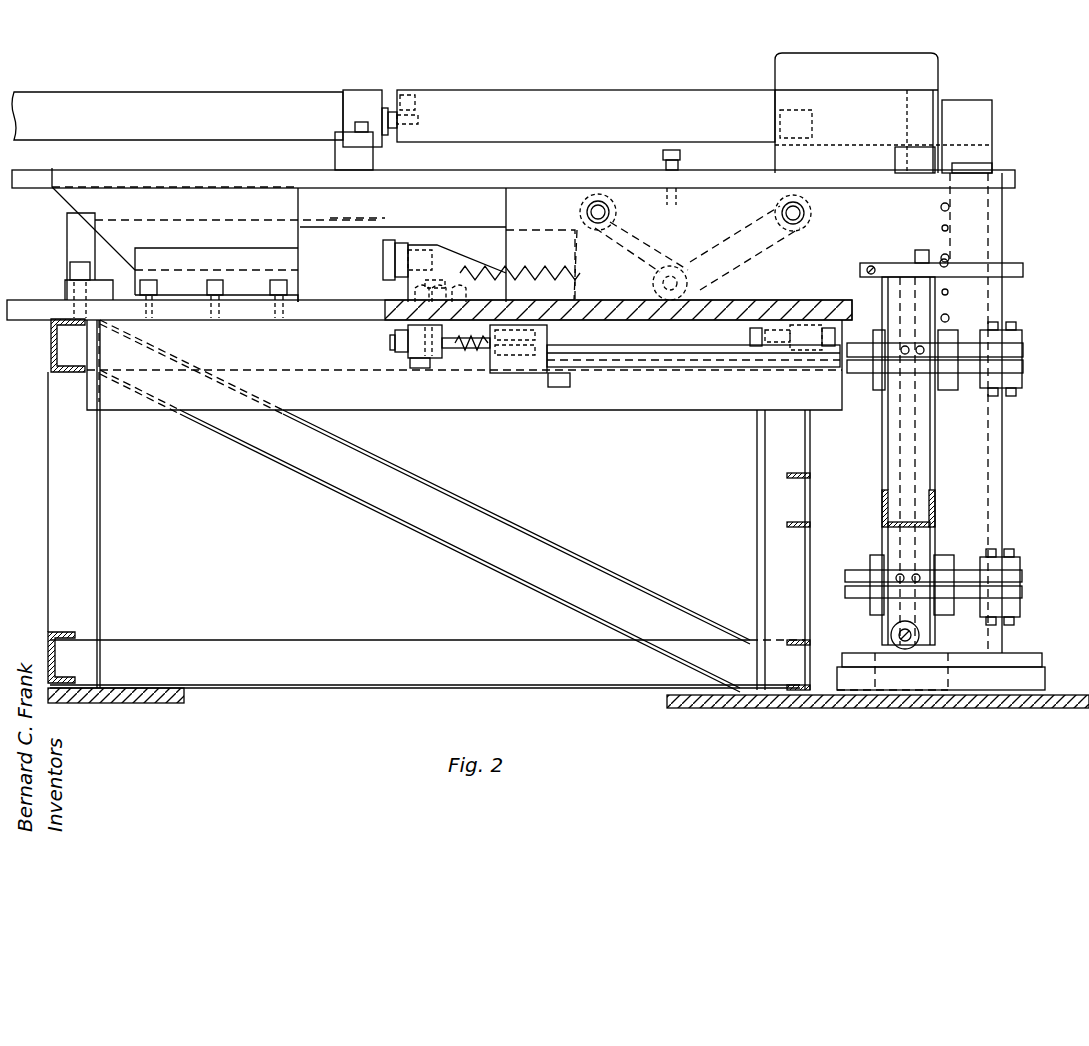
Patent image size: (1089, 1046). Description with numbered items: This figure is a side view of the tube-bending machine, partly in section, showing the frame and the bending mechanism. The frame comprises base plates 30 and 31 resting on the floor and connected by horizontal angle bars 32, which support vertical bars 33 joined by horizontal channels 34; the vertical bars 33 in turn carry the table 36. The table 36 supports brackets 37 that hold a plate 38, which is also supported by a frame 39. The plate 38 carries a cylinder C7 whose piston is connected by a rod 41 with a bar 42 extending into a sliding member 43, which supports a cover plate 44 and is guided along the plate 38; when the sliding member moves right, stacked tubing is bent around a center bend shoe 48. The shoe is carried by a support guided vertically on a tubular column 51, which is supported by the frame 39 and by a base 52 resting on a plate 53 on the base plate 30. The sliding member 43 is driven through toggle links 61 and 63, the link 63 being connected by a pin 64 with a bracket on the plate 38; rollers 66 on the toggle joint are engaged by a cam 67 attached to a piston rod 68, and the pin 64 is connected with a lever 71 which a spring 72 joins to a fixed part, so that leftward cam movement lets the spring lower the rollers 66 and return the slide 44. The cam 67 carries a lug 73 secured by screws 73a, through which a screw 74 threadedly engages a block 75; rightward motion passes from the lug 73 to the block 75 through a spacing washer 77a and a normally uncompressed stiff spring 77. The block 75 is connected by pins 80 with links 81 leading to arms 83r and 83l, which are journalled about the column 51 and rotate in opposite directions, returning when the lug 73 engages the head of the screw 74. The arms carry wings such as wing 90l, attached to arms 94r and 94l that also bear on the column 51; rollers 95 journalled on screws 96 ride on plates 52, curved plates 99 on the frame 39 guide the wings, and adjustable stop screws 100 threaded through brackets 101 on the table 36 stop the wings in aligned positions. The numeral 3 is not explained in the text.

The cylinder C7 is at (231, 96).
The rod 41 is at (388, 108).
The bar 42 is at (558, 90).
The cover plate 44 is at (775, 83).
The center bend shoe 48 is at (988, 102).
The plate 38 is at (481, 172).
The sliding member 43 is at (775, 165).
The brackets 37 is at (70, 206).
The carriage 3 is at (65, 251).
The table 36 is at (50, 302).
The piston rod 68 is at (396, 240).
The cam 67 is at (425, 245).
The frame 39 is at (506, 248).
The pin 64 is at (586, 212).
The toggle link 63 is at (660, 236).
The toggle link 61 is at (734, 240).
The rollers 66 is at (688, 278).
The spring 72 is at (526, 282).
The lever 71 is at (576, 262).
The curved plates 99 is at (1024, 270).
The tubular column 51 is at (1000, 292).
The arm 83l is at (1025, 350).
The arm 83r is at (1027, 372).
The screw 74 is at (395, 342).
The lug 73 is at (432, 360).
The screws 73a is at (410, 364).
The spacing washer 77a is at (458, 352).
The stiff spring 77 is at (478, 354).
The block 75 is at (517, 376).
The pins 80 is at (556, 388).
The links 81 is at (625, 369).
The adjustable stop screws 100 is at (748, 338).
The brackets 101 is at (792, 346).
The vertical bars 33 is at (48, 524).
The horizontal channels 34 is at (50, 360).
The wing 90l is at (935, 500).
The arm 94l is at (1024, 576).
The arm 94r is at (1024, 594).
The rollers 95 is at (919, 630).
The base 52 is at (1043, 660).
The plate 53 is at (1047, 680).
The screws 96 is at (892, 672).
The base plate 31 is at (135, 705).
The horizontal angle bars 32 is at (378, 692).
The base plate 30 is at (752, 710).